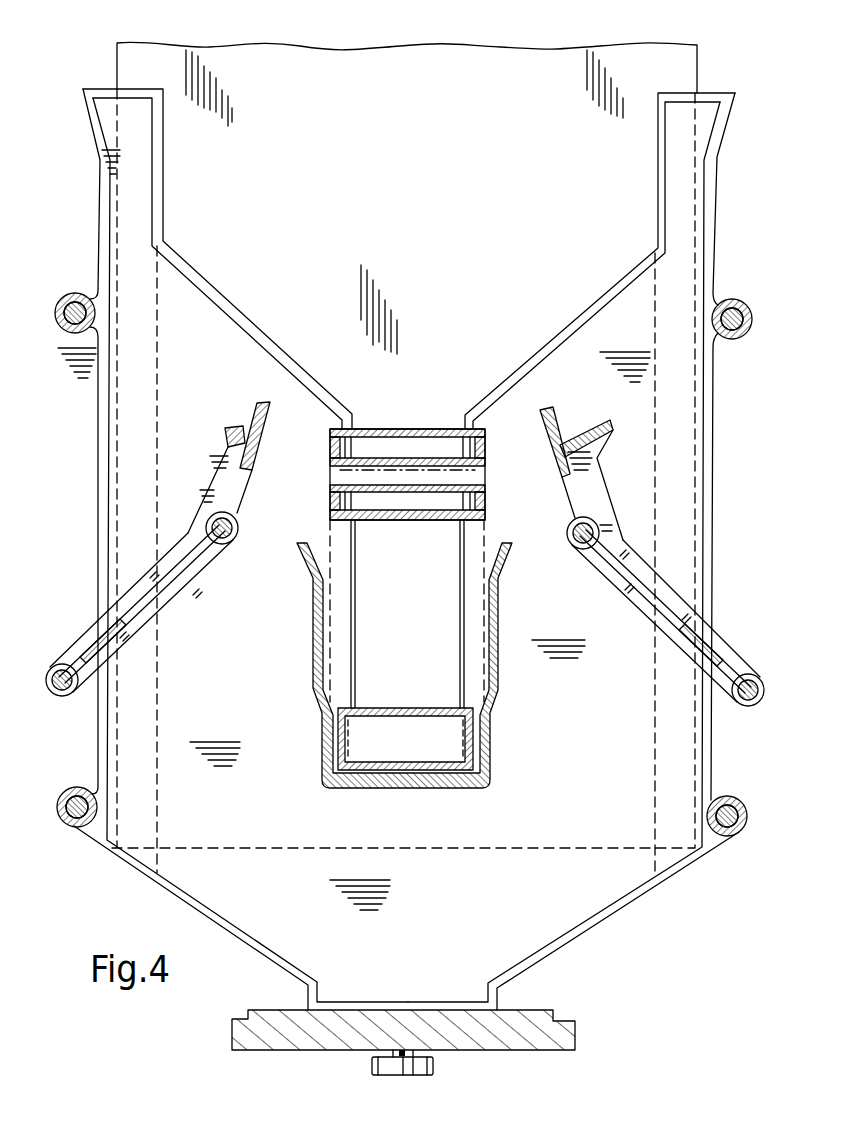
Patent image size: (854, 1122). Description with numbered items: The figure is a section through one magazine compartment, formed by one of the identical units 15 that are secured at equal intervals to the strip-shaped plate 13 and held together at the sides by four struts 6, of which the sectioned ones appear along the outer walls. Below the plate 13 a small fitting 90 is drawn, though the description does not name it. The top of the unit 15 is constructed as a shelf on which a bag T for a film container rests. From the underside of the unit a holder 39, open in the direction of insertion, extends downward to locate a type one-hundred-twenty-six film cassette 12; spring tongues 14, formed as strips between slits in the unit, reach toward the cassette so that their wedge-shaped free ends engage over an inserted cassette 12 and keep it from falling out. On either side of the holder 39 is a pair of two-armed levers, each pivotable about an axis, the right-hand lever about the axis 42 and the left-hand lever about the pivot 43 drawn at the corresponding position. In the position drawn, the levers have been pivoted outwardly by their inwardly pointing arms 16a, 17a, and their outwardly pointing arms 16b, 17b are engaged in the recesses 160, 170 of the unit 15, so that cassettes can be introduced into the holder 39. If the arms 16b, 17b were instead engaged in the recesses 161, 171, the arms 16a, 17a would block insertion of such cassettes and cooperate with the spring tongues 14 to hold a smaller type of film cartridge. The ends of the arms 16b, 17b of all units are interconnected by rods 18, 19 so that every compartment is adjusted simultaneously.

The bag T is at (229, 60).
The unit 15 is at (142, 195).
The recess 161 is at (100, 437).
The recess 171 is at (708, 437).
The strut 6 is at (75, 293).
The inwardly pointing arm 16a is at (240, 430).
The outwardly pointing arm 16b is at (98, 643).
The left arm pivot 43 is at (238, 535).
The recess 160 is at (107, 670).
The rod 18 is at (68, 697).
The inwardly pointing arm 17a is at (582, 428).
The outwardly pointing arm 17b is at (687, 643).
The axis 42 is at (573, 545).
The recess 170 is at (720, 633).
The rod 19 is at (750, 710).
The film cassette 12 is at (411, 447).
The spring tongue 14 is at (360, 637).
The holder 39 is at (500, 652).
The strip-shaped plate 13 is at (537, 1020).
The fastening nut 90 is at (433, 1067).